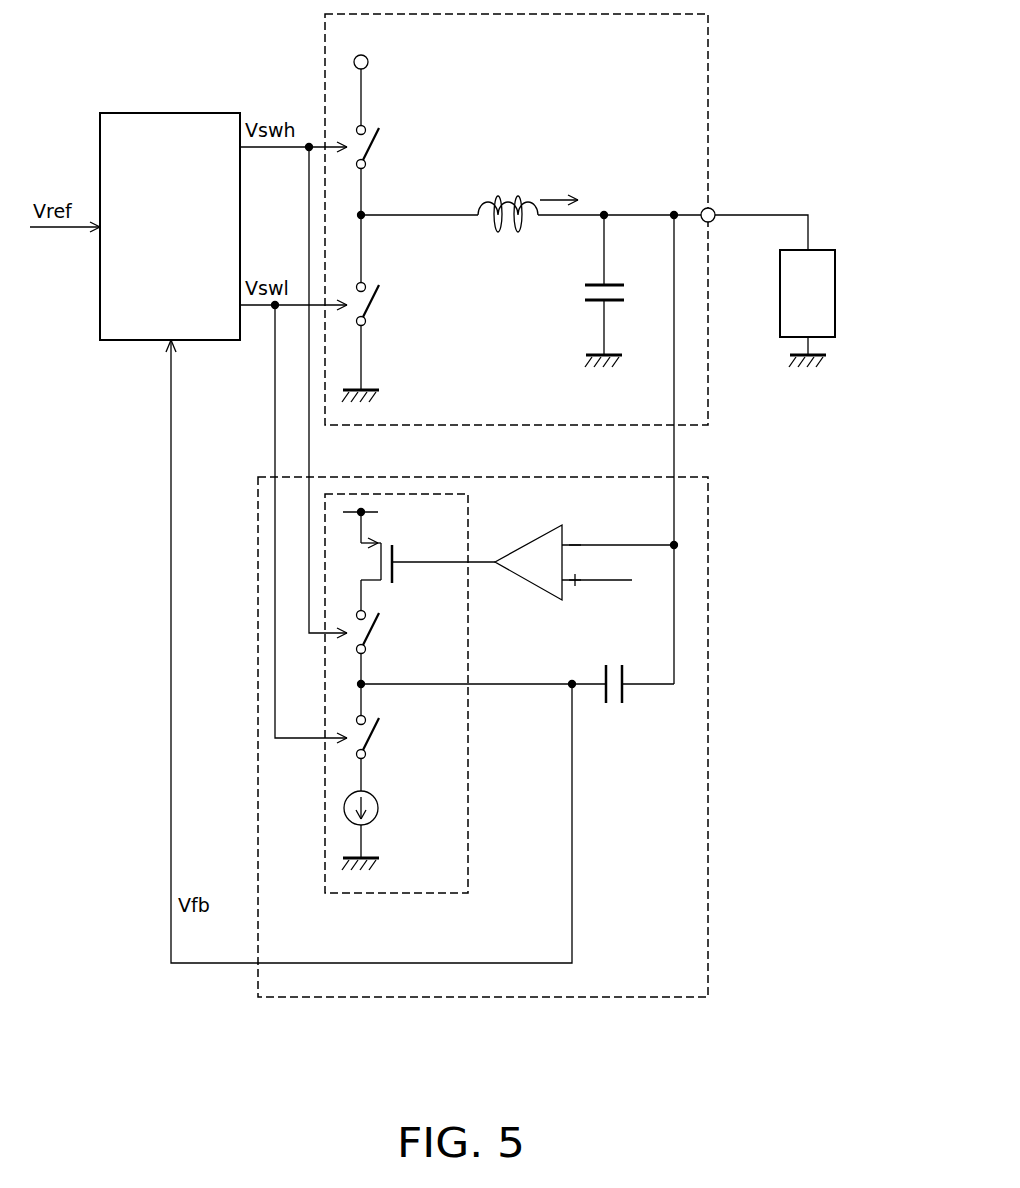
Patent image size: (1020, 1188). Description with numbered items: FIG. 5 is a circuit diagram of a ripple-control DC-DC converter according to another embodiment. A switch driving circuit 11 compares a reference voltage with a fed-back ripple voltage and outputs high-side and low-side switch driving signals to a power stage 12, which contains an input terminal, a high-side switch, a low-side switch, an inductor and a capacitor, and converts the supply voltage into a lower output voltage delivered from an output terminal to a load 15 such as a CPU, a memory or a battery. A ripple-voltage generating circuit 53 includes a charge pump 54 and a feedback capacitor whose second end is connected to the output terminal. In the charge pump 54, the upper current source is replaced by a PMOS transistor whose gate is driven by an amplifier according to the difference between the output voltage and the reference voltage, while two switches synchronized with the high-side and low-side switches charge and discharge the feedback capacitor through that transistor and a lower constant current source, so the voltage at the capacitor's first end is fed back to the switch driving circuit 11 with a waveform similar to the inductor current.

The switch driving circuit 11 is at (171, 113).
The power stage 12 is at (369, 427).
The load 15 is at (835, 293).
The ripple-voltage generating circuit 53 is at (483, 644).
The charge pump 54 is at (397, 725).